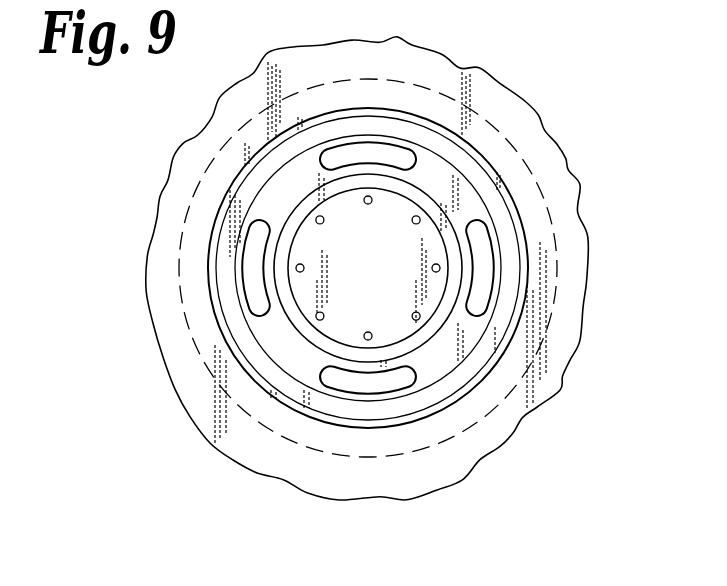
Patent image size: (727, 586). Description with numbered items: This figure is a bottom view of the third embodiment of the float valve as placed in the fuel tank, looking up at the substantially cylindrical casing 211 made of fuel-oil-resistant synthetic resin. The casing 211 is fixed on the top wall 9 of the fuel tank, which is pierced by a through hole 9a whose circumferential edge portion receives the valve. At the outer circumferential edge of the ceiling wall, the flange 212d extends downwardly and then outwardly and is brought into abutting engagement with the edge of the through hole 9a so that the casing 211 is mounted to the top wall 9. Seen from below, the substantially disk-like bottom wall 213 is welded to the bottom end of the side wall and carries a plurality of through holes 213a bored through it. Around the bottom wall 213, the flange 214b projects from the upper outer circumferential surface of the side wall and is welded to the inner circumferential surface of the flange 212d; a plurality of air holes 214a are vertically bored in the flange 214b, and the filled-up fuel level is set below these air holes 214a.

The top wall of the fuel tank 9 is at (567, 378).
The through hole 9a is at (452, 401).
The casing 211 is at (412, 430).
The flange 212d is at (228, 390).
The bottom wall 213 is at (388, 278).
The through holes 213a is at (324, 223).
The air holes 214a is at (369, 138).
The flange 214b is at (463, 197).